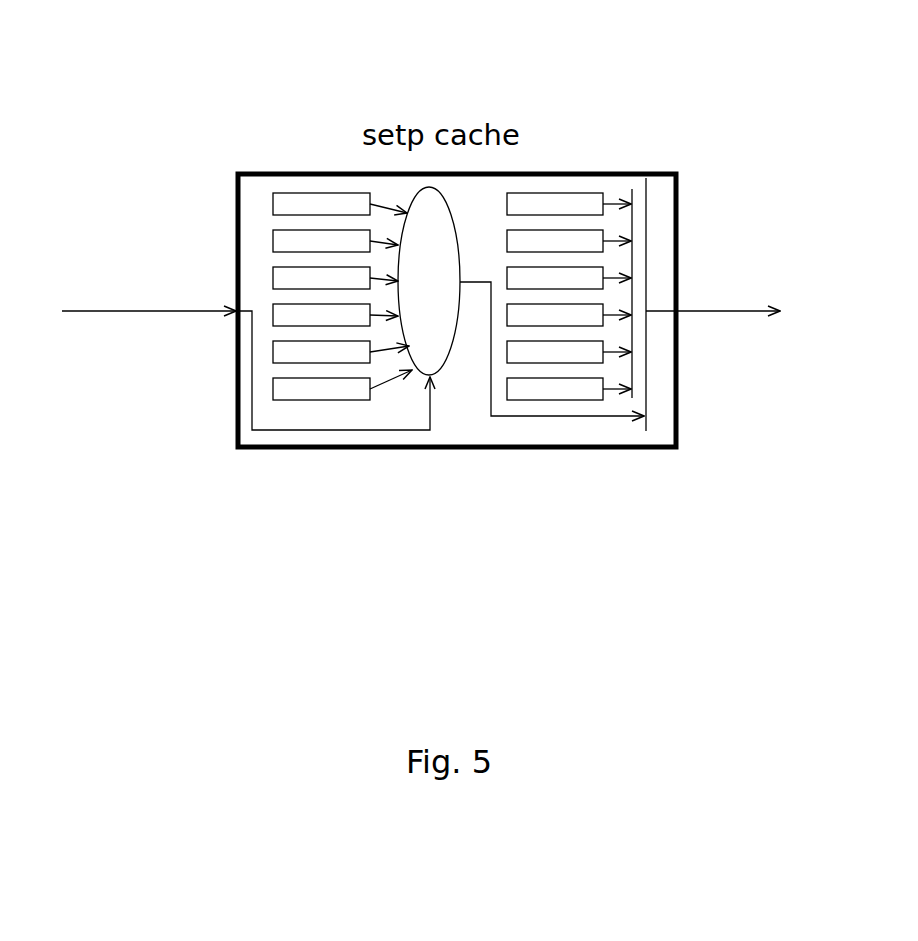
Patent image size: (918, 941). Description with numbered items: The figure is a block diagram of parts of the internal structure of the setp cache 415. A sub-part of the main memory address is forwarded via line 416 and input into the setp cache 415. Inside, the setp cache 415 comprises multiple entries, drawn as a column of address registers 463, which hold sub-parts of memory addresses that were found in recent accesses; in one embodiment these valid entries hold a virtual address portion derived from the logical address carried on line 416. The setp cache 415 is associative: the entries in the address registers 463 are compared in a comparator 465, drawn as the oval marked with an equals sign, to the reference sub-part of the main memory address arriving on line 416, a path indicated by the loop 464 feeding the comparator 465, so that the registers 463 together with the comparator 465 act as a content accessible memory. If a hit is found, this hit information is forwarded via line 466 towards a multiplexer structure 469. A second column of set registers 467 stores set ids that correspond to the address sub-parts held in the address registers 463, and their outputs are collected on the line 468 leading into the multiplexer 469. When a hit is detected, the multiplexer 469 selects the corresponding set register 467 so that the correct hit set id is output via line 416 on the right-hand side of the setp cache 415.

The setp cache 415 is at (562, 172).
The line 416 is at (100, 312).
The address registers 463 is at (320, 191).
The feedback path to comparator 464 is at (393, 390).
The comparator 465 is at (452, 352).
The line 466 is at (505, 419).
The set registers 467 is at (575, 192).
The entry output line 468 is at (612, 399).
The multiplexer structure 469 is at (640, 177).